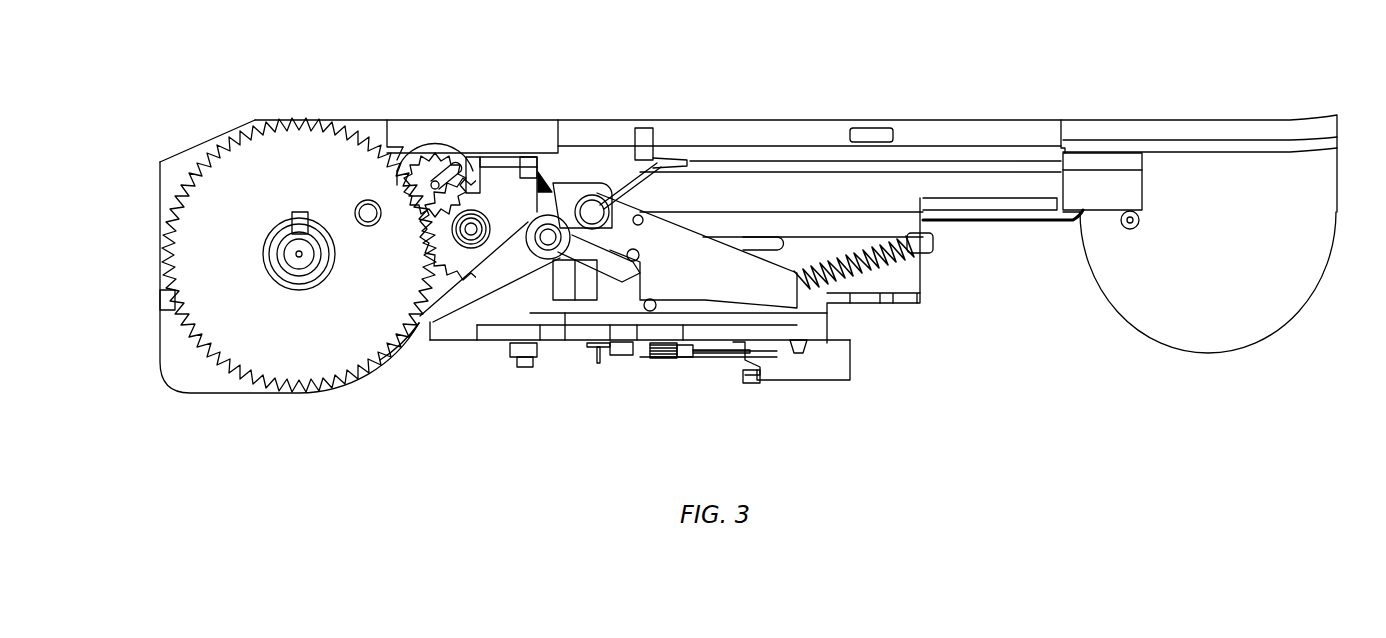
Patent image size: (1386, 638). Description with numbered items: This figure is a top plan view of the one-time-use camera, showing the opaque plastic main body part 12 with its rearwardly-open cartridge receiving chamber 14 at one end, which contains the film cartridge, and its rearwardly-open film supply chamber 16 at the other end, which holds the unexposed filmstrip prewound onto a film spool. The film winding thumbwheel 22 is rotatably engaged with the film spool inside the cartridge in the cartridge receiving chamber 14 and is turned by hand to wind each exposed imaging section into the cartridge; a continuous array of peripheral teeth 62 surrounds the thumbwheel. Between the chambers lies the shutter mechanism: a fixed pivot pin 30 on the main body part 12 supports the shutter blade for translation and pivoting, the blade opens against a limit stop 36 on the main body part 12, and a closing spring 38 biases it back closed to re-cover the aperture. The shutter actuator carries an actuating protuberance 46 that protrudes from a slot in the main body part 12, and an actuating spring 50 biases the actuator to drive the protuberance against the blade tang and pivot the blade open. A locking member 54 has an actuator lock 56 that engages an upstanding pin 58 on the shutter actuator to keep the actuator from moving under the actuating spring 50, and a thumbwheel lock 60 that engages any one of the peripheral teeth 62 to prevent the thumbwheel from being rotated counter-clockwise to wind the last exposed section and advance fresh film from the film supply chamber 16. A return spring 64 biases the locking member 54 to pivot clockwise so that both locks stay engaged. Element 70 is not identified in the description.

The main body part 12 is at (150, 206).
The cartridge receiving chamber 14 is at (172, 355).
The film supply chamber 16 is at (1312, 262).
The film winding thumbwheel 22 is at (262, 140).
The fixed pivot pin 30 is at (658, 360).
The limit stop 36 is at (527, 360).
The closing spring 38 is at (693, 357).
The actuating protuberance 46 is at (622, 358).
The actuating spring 50 is at (864, 268).
The locking member 54 is at (545, 185).
The actuator lock 56 is at (702, 355).
The upstanding pin 58 is at (650, 300).
The thumbwheel lock 60 is at (426, 306).
The peripheral teeth 62 is at (388, 350).
The return spring 64 is at (618, 192).
The block 70 is at (562, 282).